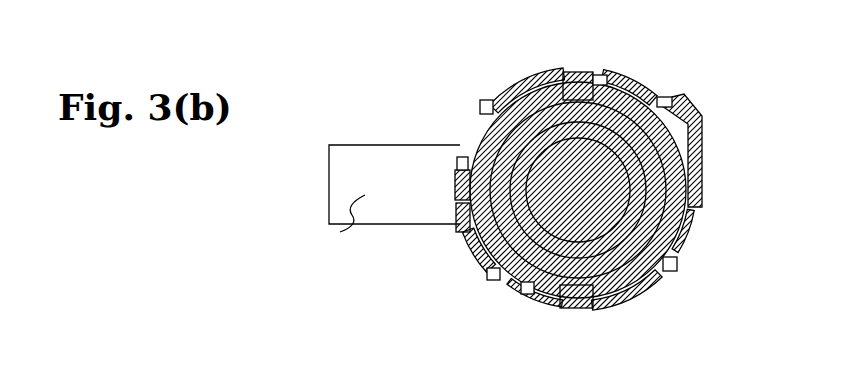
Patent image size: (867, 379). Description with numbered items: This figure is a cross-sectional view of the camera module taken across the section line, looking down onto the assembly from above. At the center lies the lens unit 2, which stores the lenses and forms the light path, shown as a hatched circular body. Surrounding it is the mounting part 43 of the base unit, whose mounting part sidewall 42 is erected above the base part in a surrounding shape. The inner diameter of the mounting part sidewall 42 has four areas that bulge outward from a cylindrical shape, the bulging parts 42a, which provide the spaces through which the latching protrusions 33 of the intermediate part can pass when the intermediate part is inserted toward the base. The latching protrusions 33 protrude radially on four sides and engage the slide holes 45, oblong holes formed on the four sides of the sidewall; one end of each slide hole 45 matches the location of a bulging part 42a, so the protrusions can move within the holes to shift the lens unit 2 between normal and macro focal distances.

The lens unit 2 is at (605, 113).
The latching protrusions 33 is at (570, 72).
The mounting part sidewall 42 is at (540, 72).
The bulging parts 42a is at (489, 88).
The mounting part 43 is at (467, 243).
The slide holes 45 is at (622, 72).